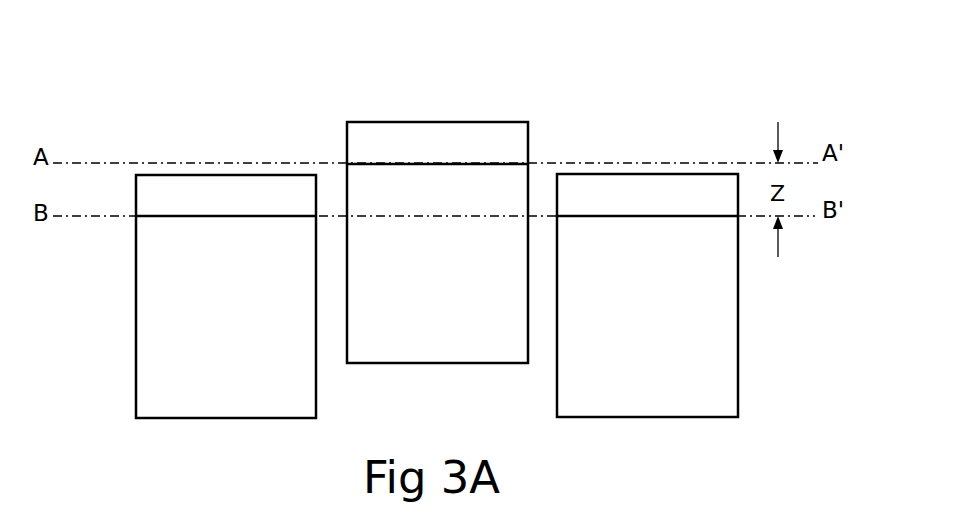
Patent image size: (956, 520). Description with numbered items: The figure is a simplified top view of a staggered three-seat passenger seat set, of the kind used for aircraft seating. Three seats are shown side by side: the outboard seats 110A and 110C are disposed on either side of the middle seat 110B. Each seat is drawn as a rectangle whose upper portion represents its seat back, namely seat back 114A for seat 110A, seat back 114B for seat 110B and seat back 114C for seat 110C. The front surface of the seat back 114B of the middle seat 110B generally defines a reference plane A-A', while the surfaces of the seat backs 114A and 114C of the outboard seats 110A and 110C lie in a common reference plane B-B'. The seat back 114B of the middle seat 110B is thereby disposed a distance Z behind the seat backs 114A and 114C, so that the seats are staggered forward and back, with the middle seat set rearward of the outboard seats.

The outboard seat 110A is at (702, 157).
The middle seat 110B is at (440, 106).
The outboard seat 110C is at (206, 158).
The seat back 114A is at (668, 174).
The seat back 114B is at (452, 164).
The seat back 114C is at (243, 216).